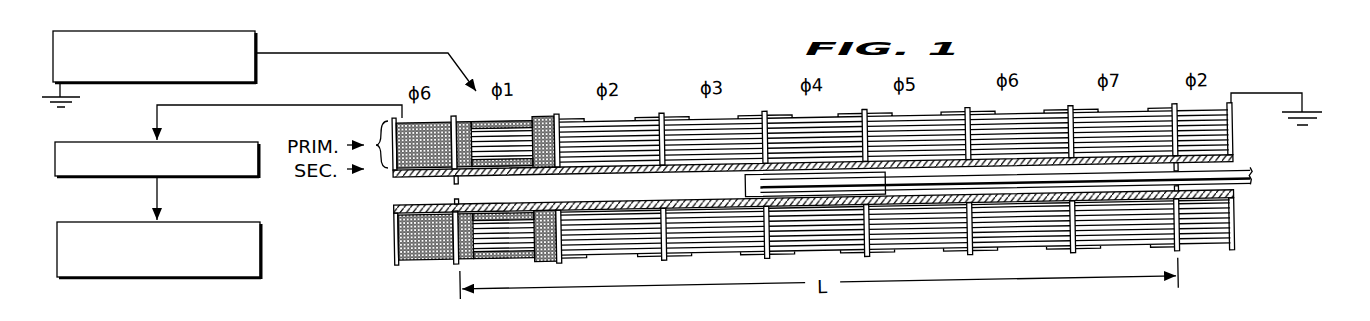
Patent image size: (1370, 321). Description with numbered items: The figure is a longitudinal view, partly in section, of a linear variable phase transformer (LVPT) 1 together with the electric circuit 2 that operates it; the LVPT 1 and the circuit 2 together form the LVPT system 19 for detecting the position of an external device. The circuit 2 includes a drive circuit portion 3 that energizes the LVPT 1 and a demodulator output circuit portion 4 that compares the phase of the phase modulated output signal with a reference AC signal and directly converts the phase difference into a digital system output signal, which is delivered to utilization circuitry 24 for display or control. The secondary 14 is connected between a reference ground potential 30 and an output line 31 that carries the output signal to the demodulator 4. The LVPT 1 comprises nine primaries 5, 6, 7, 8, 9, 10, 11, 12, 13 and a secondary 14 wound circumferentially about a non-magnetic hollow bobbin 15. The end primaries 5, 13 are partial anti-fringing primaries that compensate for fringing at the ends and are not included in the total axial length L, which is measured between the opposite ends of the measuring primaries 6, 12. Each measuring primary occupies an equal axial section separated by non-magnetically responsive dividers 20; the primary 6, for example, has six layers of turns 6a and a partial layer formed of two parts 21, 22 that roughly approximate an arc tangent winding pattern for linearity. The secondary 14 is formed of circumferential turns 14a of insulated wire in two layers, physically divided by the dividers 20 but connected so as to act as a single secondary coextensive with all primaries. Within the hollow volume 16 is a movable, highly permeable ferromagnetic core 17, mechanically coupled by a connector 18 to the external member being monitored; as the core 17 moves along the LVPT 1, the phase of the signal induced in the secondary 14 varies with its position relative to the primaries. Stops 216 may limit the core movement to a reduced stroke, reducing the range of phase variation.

The linear variable phase transformer (LVPT) 1 is at (603, 60).
The electric circuit 2 is at (366, 42).
The drive circuit portion 3 is at (257, 43).
The demodulator output circuit portion 4 is at (195, 142).
The end primary (anti-fringing primary) 5 is at (423, 120).
The first measuring primary 6 is at (519, 125).
The layers of turns 6a is at (533, 150).
The second measuring primary 7 is at (617, 125).
The measuring primary 8 is at (717, 125).
The fourth measuring primary 9 is at (817, 125).
The fifth measuring primary 10 is at (920, 125).
The measuring primary 11 is at (1022, 125).
The seventh measuring primary 12 is at (1120, 125).
The end primary (anti-fringing primary) 13 is at (1205, 125).
The secondary 14 is at (422, 178).
The circumferential turns 14a is at (388, 170).
The bobbin 15 is at (393, 210).
The hollow volume 16 is at (620, 189).
The core 17 is at (745, 183).
The connector 18 is at (1249, 198).
The LVPT system 19 is at (334, 258).
The dividers (spacers) 20 is at (455, 117).
The partial layer part 21 is at (481, 120).
The partial layer part 22 is at (552, 120).
The utilization circuitry 24 is at (261, 240).
The reference ground potential 30 is at (1306, 125).
The output line 31 is at (285, 105).
The stops 216 is at (455, 201).